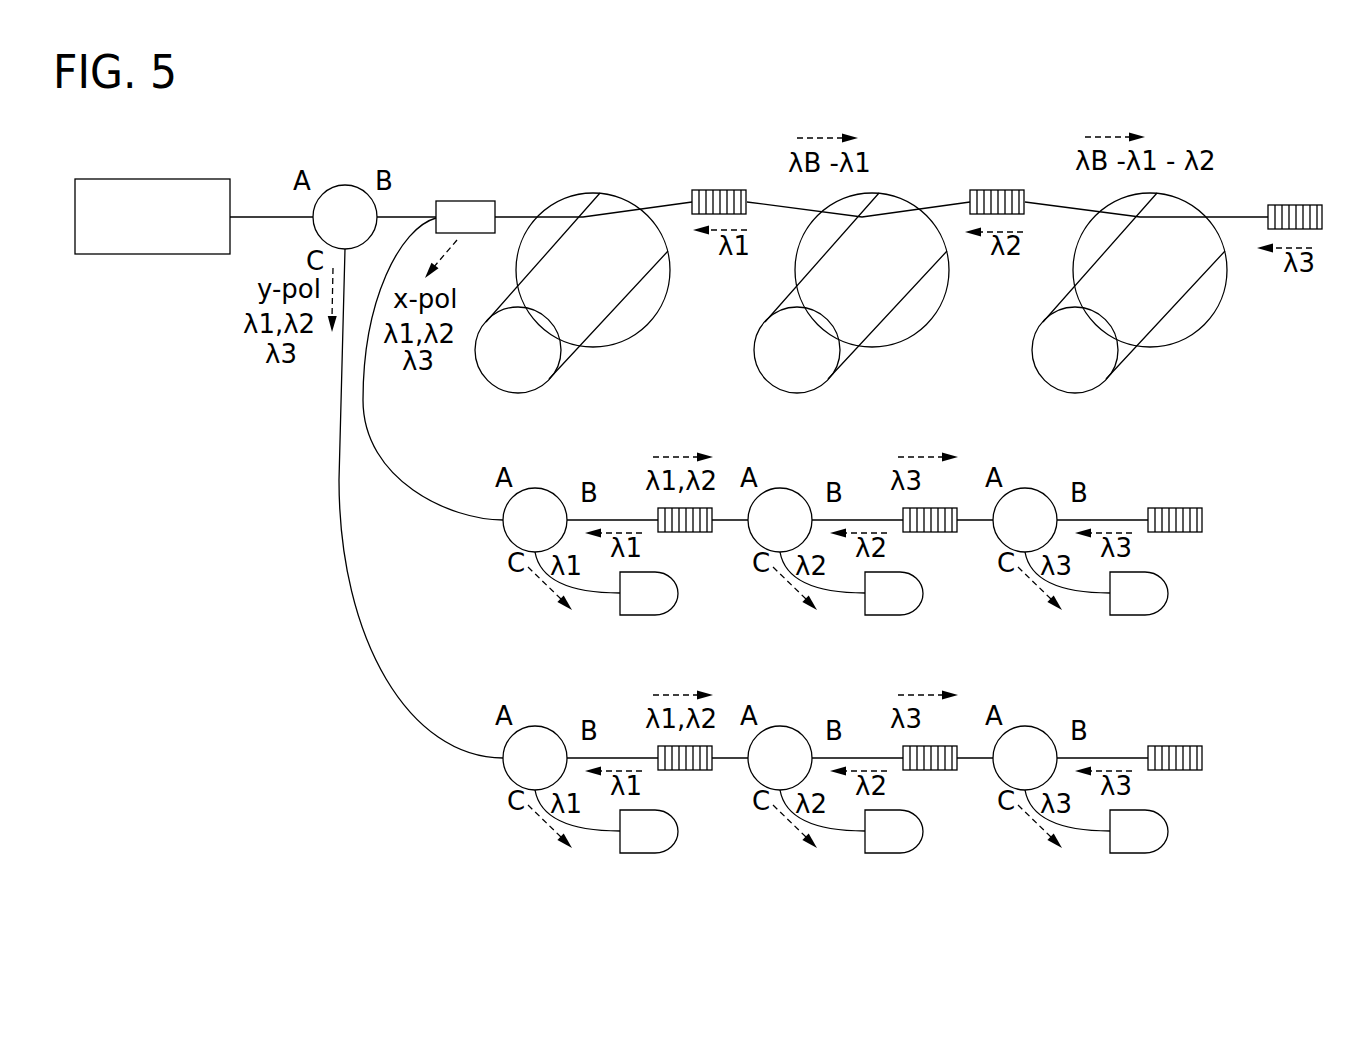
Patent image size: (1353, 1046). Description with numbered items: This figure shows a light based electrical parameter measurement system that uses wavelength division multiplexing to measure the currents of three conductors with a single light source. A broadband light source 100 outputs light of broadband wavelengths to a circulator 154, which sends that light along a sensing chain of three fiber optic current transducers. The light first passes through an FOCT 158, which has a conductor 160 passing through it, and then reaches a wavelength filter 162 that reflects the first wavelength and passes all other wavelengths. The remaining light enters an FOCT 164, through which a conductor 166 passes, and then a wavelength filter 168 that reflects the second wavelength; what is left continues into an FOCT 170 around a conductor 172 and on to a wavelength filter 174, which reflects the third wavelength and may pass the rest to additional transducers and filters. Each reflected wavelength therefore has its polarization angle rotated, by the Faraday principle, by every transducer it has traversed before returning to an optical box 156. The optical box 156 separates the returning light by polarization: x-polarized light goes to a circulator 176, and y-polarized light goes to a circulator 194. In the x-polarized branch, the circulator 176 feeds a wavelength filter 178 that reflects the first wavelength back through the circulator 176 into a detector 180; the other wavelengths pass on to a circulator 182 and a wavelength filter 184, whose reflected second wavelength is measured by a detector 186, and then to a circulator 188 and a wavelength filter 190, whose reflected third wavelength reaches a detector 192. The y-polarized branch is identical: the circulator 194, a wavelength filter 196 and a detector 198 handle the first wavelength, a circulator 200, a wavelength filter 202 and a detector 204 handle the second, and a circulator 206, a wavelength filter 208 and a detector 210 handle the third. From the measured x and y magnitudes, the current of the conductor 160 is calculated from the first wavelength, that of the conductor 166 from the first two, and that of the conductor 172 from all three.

The broadband light source 100 is at (173, 232).
The circulator 154 is at (366, 230).
The optical box 156 is at (486, 231).
The FOCT 158 is at (622, 364).
The conductor 160 is at (557, 288).
The wavelength filter 162 is at (704, 190).
The FOCT 164 is at (901, 364).
The conductor 166 is at (836, 288).
The wavelength filter 168 is at (984, 190).
The FOCT 170 is at (1179, 366).
The conductor 172 is at (1114, 288).
The wavelength filter 174 is at (1279, 205).
The circulator 176 is at (556, 533).
The wavelength filter 178 is at (665, 532).
The detector 180 is at (669, 609).
The circulator 182 is at (801, 533).
The wavelength filter 184 is at (910, 532).
The detector 186 is at (914, 609).
The circulator 188 is at (1046, 533).
The wavelength filter 190 is at (1155, 532).
The detector 192 is at (1159, 609).
The circulator 194 is at (556, 771).
The wavelength filter 196 is at (665, 770).
The detector 198 is at (669, 847).
The circulator 200 is at (801, 771).
The wavelength filter 202 is at (910, 770).
The detector 204 is at (914, 847).
The circulator 206 is at (1046, 771).
The wavelength filter 208 is at (1155, 770).
The detector 210 is at (1159, 847).